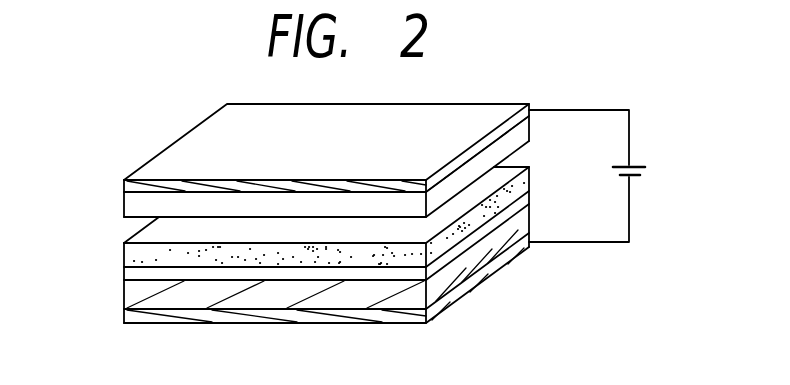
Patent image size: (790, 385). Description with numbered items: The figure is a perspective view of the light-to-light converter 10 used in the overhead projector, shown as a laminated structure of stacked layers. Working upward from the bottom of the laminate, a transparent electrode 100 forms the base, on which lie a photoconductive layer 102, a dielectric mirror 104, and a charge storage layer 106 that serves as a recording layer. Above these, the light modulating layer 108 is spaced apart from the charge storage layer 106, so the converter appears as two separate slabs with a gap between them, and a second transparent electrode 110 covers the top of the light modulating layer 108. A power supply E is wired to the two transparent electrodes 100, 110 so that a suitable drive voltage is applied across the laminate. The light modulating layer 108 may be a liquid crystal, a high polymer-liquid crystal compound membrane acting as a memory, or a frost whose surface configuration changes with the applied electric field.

The light-to-light converter 10 is at (186, 130).
The transparent electrode 100 is at (124, 317).
The photoconductive layer 102 is at (124, 295).
The dielectric mirror 104 is at (124, 273).
The charge storage layer 106 is at (124, 255).
The light modulating layer 108 is at (124, 205).
The transparent electrode 110 is at (124, 187).
The power supply E is at (653, 173).